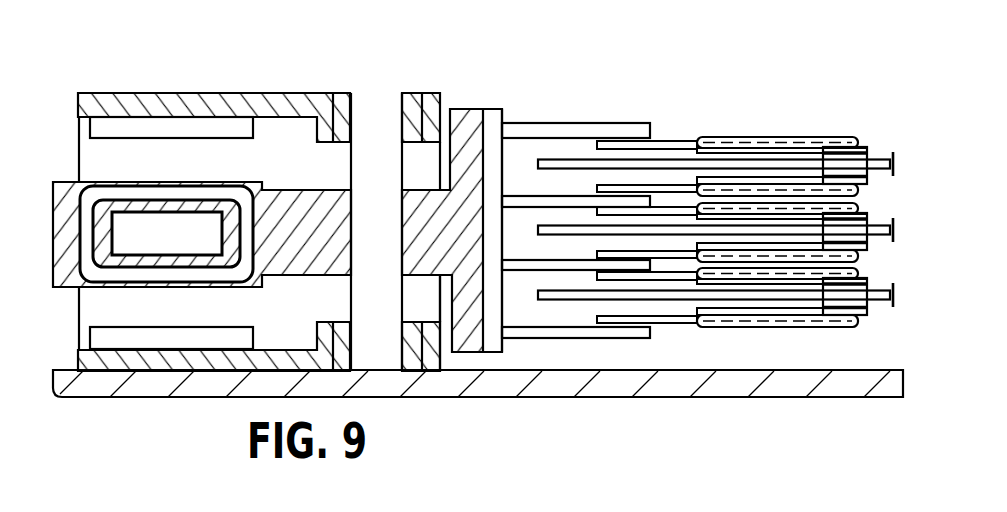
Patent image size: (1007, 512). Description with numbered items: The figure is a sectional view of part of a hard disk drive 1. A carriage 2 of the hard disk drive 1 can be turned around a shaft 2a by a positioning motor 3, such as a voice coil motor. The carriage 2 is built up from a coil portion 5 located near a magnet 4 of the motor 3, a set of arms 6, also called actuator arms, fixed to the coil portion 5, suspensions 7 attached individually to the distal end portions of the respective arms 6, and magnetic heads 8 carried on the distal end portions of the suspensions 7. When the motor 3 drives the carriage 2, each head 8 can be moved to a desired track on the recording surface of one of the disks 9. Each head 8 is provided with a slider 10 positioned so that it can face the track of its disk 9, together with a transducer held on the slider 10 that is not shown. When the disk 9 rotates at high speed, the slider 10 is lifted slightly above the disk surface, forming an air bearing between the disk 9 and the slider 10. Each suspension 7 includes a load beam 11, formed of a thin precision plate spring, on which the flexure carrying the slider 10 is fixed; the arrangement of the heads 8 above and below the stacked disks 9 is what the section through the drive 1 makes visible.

The hard disk drive 1 is at (667, 101).
The carriage 2 is at (500, 100).
The shaft 2a is at (376, 114).
The positioning motor 3 is at (265, 88).
The magnet 4 is at (132, 129).
The coil portion 5 is at (223, 182).
The arm 6 is at (550, 122).
The suspension 7 is at (774, 178).
The magnetic head 8 is at (870, 172).
The disk 9 is at (566, 229).
The slider 10 is at (828, 156).
The load beam 11 is at (721, 137).